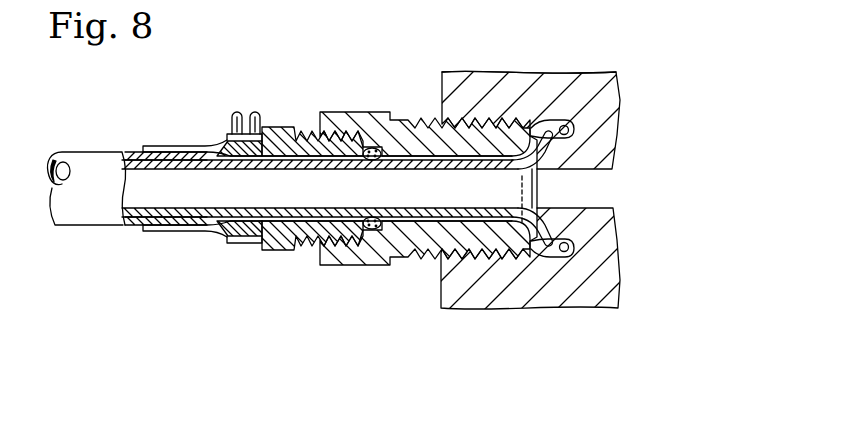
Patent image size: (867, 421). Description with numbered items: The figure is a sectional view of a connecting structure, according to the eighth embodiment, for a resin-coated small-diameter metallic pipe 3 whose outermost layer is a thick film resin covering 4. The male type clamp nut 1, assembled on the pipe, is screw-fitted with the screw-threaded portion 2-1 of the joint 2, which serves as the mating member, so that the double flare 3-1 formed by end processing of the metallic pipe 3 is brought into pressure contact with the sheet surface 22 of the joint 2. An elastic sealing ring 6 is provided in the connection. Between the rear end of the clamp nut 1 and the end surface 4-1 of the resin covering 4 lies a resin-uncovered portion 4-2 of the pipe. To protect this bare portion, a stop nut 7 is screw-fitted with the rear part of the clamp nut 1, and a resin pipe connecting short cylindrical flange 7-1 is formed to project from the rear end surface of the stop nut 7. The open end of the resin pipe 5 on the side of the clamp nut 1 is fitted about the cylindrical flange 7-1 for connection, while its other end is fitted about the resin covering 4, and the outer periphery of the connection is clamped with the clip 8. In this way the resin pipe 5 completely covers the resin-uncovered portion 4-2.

The clamp nut 1 is at (389, 112).
The joint 2 is at (553, 72).
The screw-threaded portion 2-1 is at (577, 72).
The sheet surface 22 is at (565, 133).
The resin-coated small-diameter metallic pipe 3 is at (80, 152).
The double flare 3-1 is at (548, 240).
The thick film resin covering 4 is at (137, 152).
The end surface of the resin-coated layer 4-1 is at (207, 150).
The resin-uncovered portion 4-2 is at (195, 226).
The resin pipe 5 is at (167, 147).
The elastic sealing ring 6 is at (368, 230).
The stop nut 7 is at (275, 250).
The resin pipe connecting short cylindrical flange 7-1 is at (228, 140).
The clip 8 is at (259, 113).